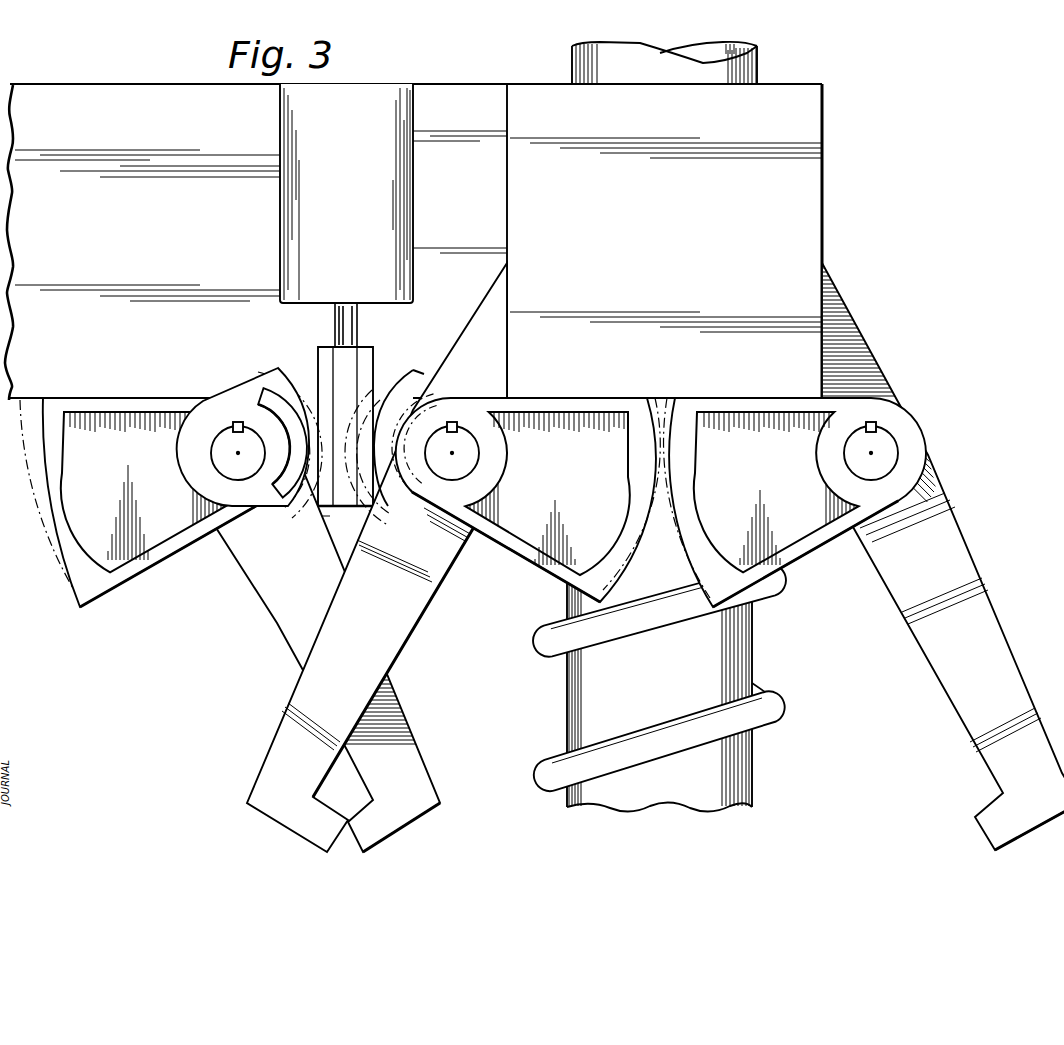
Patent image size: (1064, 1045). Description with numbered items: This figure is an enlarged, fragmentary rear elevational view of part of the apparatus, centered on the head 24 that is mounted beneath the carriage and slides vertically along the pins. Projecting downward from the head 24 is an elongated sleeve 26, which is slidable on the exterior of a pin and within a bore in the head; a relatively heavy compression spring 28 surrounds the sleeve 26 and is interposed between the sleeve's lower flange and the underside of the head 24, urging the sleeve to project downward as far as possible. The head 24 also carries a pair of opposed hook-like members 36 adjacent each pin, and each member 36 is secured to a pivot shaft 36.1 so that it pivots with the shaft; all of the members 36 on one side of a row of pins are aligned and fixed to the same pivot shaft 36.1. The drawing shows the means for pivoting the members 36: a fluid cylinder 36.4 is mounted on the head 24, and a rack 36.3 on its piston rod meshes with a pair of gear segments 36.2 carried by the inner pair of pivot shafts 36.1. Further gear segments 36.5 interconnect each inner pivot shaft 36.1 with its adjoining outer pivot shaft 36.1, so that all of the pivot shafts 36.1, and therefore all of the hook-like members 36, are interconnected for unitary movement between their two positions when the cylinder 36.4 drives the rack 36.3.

The head 24 is at (826, 220).
The elongated sleeve 26 is at (572, 62).
The compression spring 28 is at (750, 722).
The hook-like member 36 is at (283, 735).
The pivot shaft 36.1 is at (237, 458).
The gear segment 36.2 is at (262, 384).
The rack 36.3 is at (337, 368).
The fluid cylinder 36.4 is at (373, 158).
The gear segment 36.5 is at (100, 583).